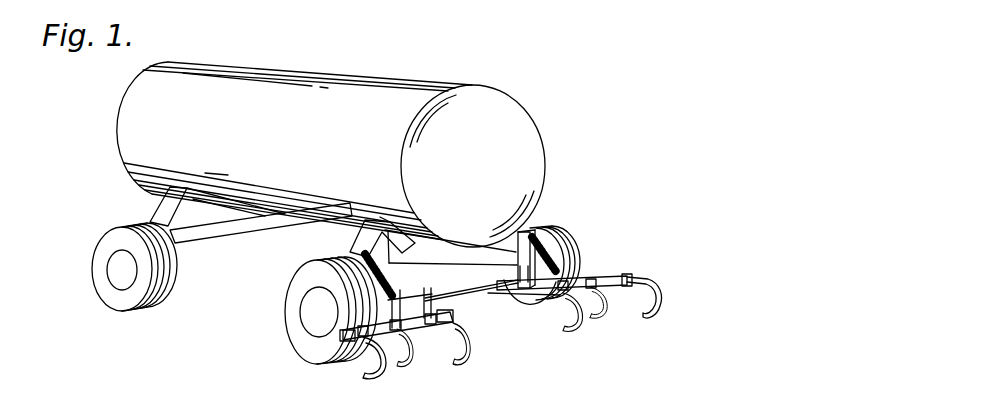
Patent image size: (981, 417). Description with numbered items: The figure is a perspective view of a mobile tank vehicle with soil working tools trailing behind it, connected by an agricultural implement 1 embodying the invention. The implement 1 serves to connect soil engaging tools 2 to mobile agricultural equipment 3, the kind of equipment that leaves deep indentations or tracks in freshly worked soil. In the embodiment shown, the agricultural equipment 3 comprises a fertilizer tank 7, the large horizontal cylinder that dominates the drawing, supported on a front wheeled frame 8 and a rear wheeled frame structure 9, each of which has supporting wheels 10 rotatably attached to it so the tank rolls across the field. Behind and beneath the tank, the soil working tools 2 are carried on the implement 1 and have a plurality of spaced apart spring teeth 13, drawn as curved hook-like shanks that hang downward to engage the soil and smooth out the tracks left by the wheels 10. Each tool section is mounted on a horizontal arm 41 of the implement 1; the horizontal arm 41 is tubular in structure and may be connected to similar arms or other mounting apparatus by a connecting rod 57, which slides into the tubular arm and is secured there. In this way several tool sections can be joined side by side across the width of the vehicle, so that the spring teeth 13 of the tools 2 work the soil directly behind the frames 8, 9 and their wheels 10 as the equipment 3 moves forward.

The agricultural implement 1 is at (507, 339).
The soil engaging tool 2 is at (360, 390).
The mobile agricultural equipment 3 is at (345, 138).
The fertilizer tank 7 is at (333, 76).
The front wheeled frame 8 is at (227, 241).
The rear wheeled frame structure 9 is at (352, 245).
The supporting wheel 10 is at (123, 313).
The spring tooth 13 is at (469, 349).
The horizontal arm 41 is at (438, 289).
The connecting rod 57 is at (455, 296).